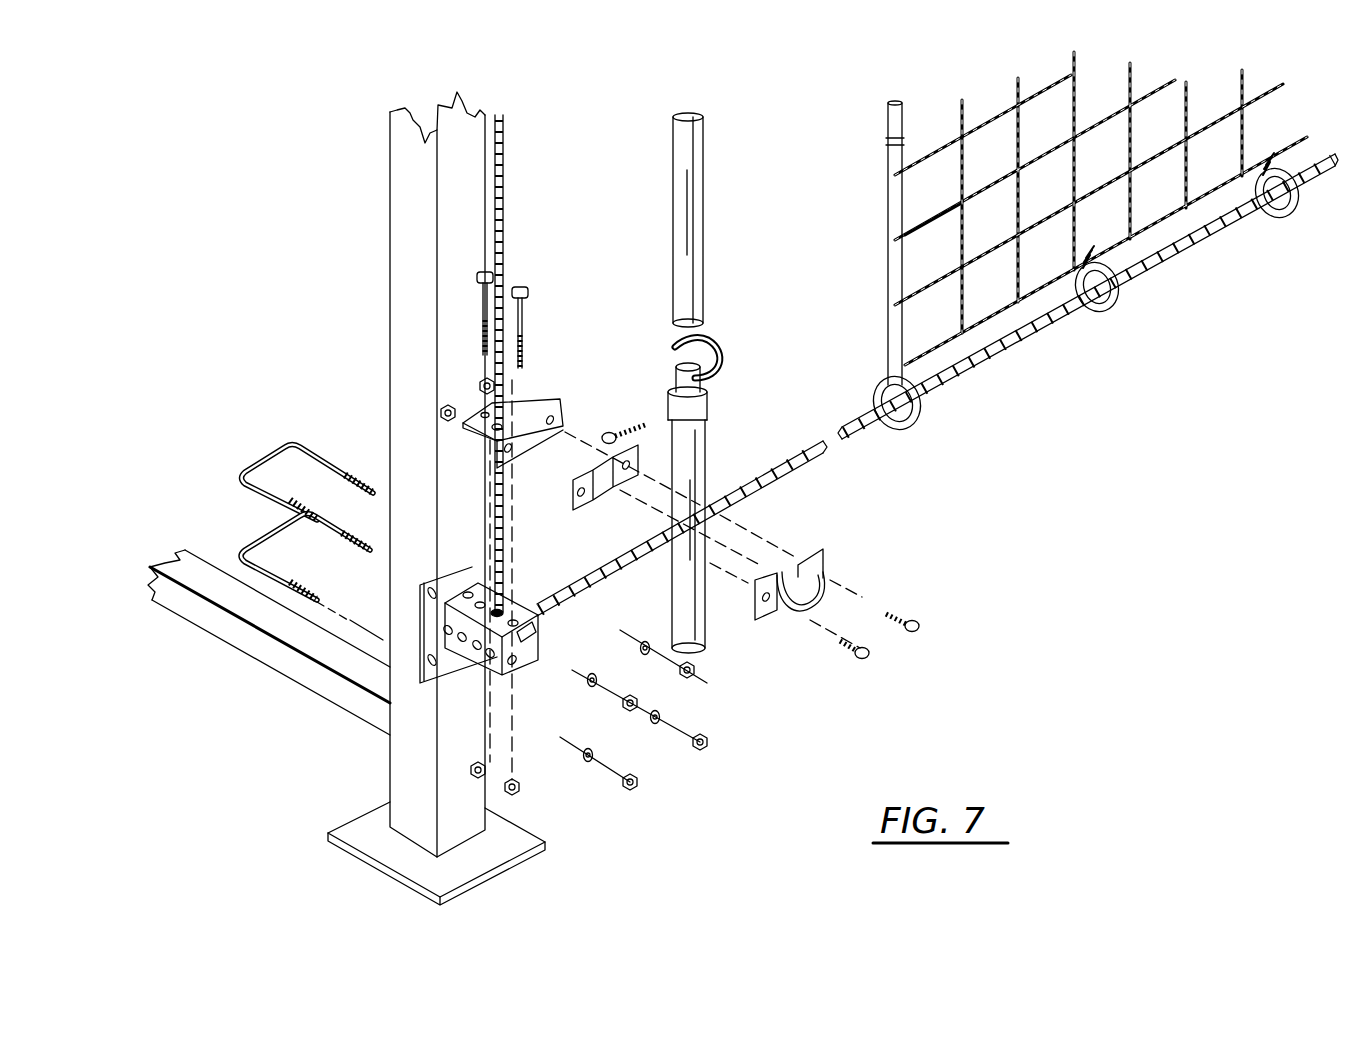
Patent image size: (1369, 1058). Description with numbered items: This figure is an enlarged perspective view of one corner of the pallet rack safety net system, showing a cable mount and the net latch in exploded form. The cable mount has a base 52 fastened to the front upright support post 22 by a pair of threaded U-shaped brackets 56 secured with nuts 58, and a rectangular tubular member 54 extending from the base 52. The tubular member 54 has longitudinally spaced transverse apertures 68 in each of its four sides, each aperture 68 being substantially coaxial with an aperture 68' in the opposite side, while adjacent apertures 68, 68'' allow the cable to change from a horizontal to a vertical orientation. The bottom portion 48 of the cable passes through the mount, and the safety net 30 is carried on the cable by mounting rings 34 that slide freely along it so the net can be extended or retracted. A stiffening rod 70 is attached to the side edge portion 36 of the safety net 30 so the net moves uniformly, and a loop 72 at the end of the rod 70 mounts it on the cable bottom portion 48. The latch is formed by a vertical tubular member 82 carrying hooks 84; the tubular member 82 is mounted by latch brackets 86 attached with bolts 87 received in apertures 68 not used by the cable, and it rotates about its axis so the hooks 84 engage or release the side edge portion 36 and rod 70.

The front upright support post 22 is at (390, 234).
The safety net 30 is at (1130, 82).
The mounting rings 34 is at (1290, 210).
The side edge portion 36 is at (935, 200).
The bottom portion of the cable 48 is at (1028, 338).
The base 52 is at (420, 590).
The rectangular tubular member 54 is at (475, 657).
The threaded U-shaped brackets 56 is at (253, 462).
The nuts 58 is at (710, 740).
The transverse apertures 68 is at (534, 584).
The aperture in opposite side 68' is at (543, 688).
The adjacent aperture 68'' is at (563, 647).
The stiffening rod 70 is at (887, 120).
The loop 72 is at (920, 423).
The vertical tubular member 82 is at (704, 165).
The hooks 84 is at (720, 362).
The latch brackets 86 is at (600, 405).
The bolts 87 is at (523, 288).